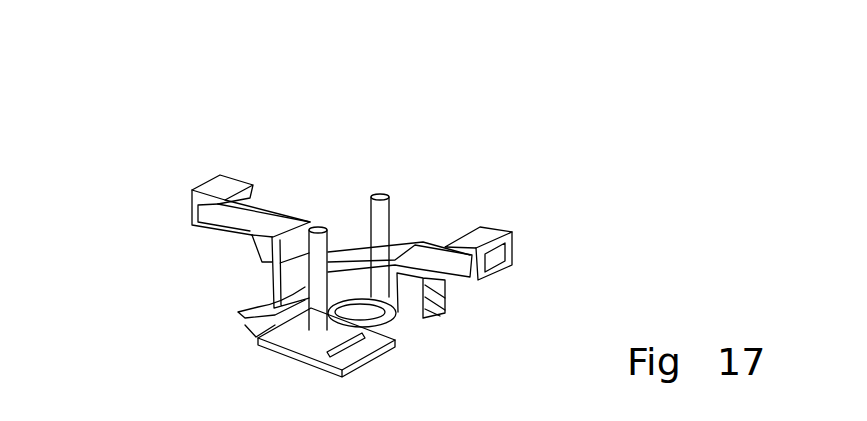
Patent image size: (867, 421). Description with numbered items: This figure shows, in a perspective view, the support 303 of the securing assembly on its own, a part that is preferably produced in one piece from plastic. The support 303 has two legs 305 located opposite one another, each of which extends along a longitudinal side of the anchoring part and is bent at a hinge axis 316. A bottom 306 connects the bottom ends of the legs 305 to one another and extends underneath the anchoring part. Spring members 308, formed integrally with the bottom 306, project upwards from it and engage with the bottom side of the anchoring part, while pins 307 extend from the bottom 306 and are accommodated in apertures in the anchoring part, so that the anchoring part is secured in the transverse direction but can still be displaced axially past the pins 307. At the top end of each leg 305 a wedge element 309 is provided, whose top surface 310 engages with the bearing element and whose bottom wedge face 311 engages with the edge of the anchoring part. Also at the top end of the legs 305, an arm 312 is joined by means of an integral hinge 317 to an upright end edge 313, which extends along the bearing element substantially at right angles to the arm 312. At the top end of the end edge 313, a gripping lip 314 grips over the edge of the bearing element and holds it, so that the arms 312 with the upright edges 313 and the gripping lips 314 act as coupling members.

The support 303 is at (467, 83).
The legs 305 is at (246, 323).
The bottom 306 is at (310, 347).
The pins 307 is at (369, 208).
The spring members 308 is at (414, 240).
The wedge element 309 is at (272, 222).
The top surface 310 is at (282, 216).
The bottom wedge face 311 is at (262, 262).
The arm 312 is at (262, 218).
The upright end edge 313 is at (197, 220).
The gripping lip 314 is at (215, 182).
The hinge axis 316 is at (258, 283).
The integral hinge 317 is at (266, 222).